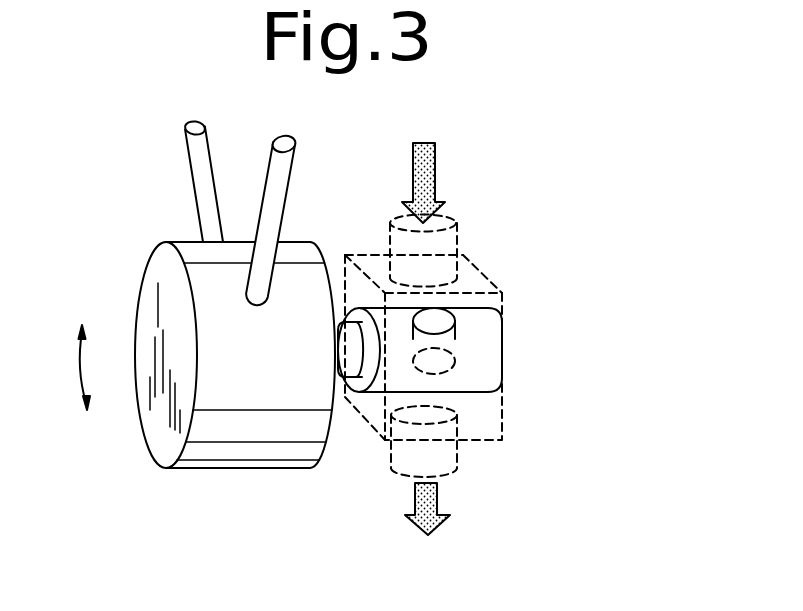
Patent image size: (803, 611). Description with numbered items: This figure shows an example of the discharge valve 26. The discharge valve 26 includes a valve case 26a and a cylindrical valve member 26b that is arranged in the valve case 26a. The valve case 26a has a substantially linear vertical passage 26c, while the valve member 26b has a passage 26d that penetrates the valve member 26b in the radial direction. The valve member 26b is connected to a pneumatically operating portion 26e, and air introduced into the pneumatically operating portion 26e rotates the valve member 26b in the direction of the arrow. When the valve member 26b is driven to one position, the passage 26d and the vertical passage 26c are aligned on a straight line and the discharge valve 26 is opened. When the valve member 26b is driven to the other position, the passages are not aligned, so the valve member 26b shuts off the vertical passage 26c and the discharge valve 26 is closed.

The discharge valve 26 is at (476, 328).
The valve case 26a is at (485, 270).
The cylindrical valve member 26b is at (477, 373).
The vertical passage 26c is at (457, 212).
The passage 26d is at (437, 323).
The pneumatically operating portion 26e is at (272, 433).